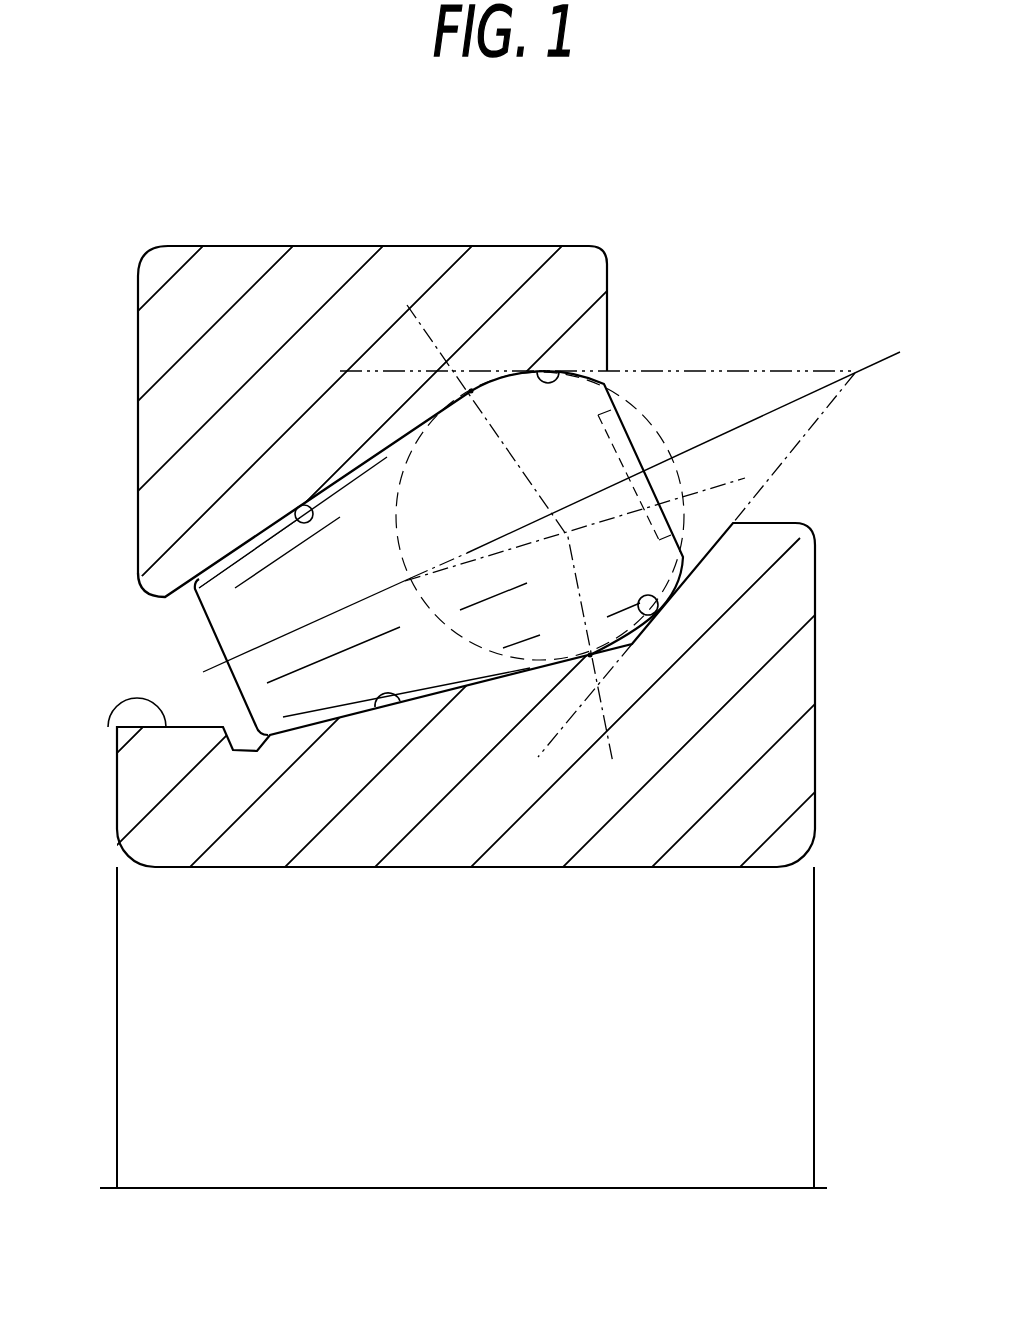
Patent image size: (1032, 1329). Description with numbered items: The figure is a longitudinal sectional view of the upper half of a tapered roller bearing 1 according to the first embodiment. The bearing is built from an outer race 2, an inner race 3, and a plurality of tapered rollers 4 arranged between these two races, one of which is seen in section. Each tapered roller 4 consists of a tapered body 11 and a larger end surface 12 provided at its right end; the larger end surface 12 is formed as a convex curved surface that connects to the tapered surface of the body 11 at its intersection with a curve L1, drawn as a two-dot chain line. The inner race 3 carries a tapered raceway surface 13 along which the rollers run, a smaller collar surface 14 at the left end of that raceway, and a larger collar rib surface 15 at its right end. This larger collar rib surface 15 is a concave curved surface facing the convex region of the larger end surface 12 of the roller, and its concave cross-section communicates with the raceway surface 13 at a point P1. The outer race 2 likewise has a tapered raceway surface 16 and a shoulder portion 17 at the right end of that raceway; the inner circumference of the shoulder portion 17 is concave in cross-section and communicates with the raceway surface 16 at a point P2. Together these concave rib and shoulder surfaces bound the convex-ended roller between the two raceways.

The tapered roller bearing 1 is at (566, 594).
The outer race 2 is at (490, 285).
The inner race 3 is at (761, 767).
The tapered roller 4 is at (231, 591).
The tapered body 11 is at (256, 577).
The larger end surface 12 is at (578, 413).
The tapered raceway surface 13 is at (373, 712).
The smaller collar surface 14 is at (110, 726).
The larger collar rib surface 15 is at (672, 590).
The tapered raceway surface 16 is at (296, 524).
The shoulder portion 17 is at (565, 372).
The curve L1 is at (718, 486).
The point P1 is at (592, 657).
The point P2 is at (470, 388).